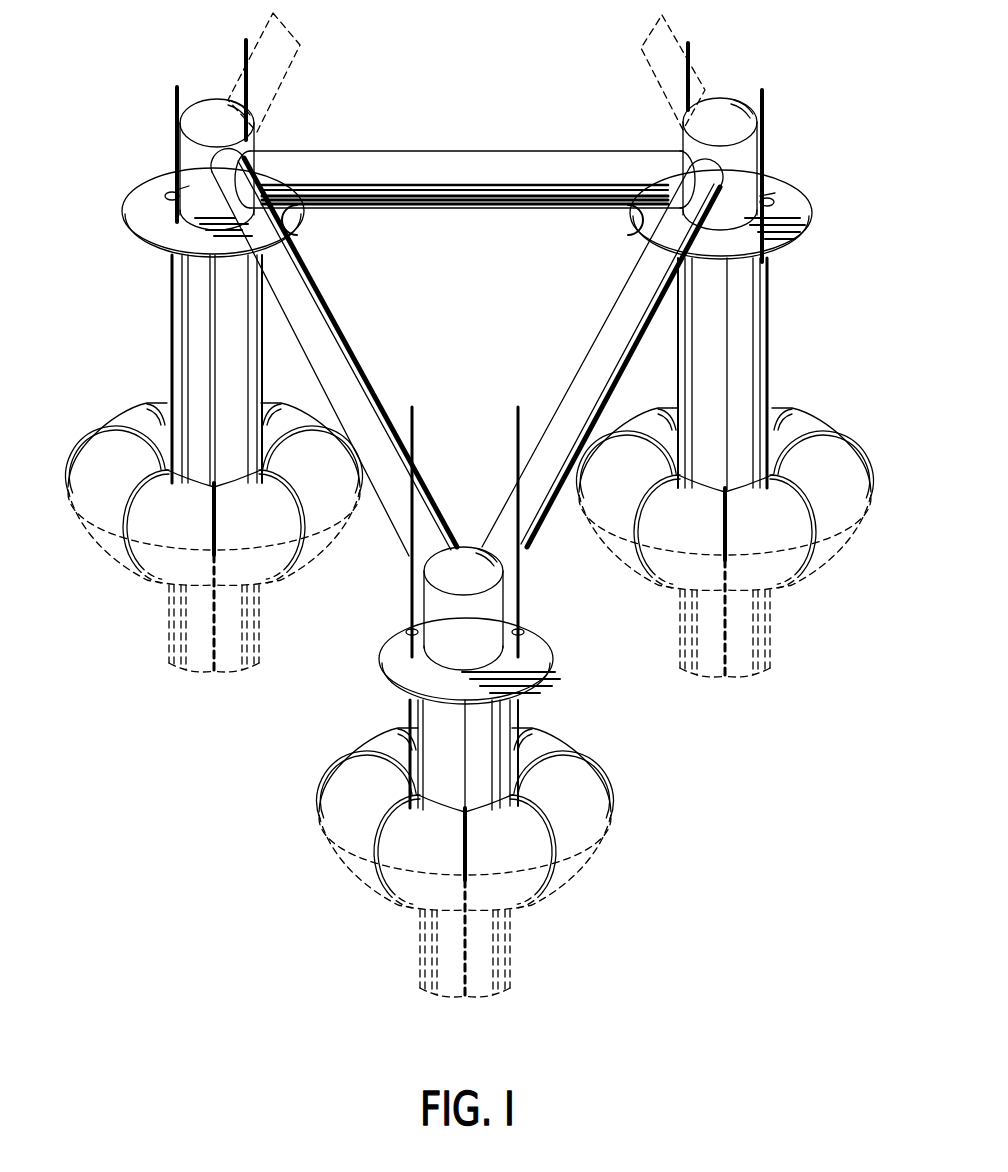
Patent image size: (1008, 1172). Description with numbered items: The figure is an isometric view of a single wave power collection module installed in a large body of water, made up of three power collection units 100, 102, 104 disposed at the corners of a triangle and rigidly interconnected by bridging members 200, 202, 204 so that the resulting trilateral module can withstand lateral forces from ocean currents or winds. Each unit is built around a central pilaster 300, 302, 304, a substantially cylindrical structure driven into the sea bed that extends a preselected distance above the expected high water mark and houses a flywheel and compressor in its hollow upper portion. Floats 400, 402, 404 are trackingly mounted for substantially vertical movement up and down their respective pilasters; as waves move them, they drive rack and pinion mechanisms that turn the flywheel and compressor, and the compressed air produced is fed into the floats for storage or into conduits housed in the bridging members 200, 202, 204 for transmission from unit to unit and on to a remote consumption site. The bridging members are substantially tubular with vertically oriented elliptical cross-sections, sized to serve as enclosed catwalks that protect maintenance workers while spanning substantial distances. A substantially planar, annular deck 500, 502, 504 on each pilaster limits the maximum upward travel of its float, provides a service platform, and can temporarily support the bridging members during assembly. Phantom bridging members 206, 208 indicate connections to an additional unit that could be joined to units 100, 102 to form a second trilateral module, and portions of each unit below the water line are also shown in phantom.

The power collection unit 100 is at (620, 740).
The power collection unit 102 is at (146, 273).
The power collection unit 104 is at (800, 270).
The bridging member 200 is at (320, 333).
The bridging member 202 is at (520, 158).
The bridging member 204 is at (606, 339).
The phantom bridging member 206 is at (283, 62).
The phantom bridging member 208 is at (656, 66).
The pilaster 300 is at (445, 733).
The pilaster 302 is at (200, 333).
The pilaster 304 is at (740, 337).
The float 400 is at (338, 820).
The float 402 is at (148, 428).
The float 404 is at (795, 429).
The deck 500 is at (540, 651).
The deck 502 is at (297, 224).
The deck 504 is at (636, 222).